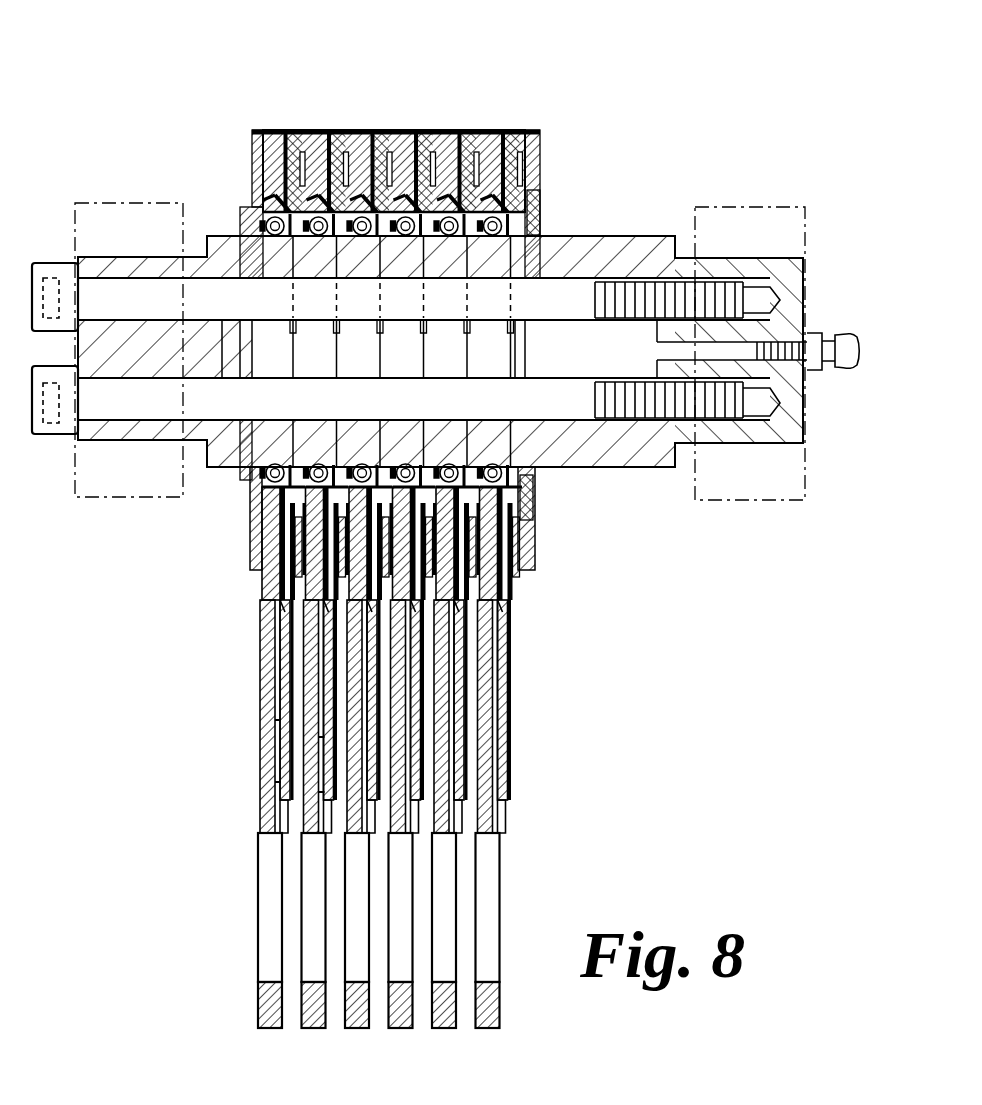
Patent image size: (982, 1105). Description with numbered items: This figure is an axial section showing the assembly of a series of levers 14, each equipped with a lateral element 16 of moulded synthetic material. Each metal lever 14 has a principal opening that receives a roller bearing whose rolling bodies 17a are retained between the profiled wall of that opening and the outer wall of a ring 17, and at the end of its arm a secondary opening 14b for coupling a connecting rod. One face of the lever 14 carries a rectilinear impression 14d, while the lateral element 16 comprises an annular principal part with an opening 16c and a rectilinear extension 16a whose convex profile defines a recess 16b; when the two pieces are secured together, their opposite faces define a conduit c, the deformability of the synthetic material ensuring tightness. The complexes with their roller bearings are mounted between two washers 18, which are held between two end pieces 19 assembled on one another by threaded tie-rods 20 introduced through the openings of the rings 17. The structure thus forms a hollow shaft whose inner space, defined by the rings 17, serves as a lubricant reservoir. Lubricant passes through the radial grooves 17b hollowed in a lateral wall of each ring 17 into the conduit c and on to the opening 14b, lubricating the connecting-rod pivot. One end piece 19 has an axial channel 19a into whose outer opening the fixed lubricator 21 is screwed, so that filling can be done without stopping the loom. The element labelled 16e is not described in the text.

The metal lever 14 is at (357, 130).
The lateral element 16 is at (468, 130).
The end piece 19 is at (657, 236).
The washer 18 is at (540, 163).
The rolling bodies 17a is at (270, 212).
The opening of the annular principal part 16c is at (540, 222).
The axial channel 19a is at (735, 347).
The threaded tie-rod 20 is at (168, 298).
The ring 17 is at (227, 403).
The radial grooves 17b is at (518, 435).
The lower housing wall 16e is at (533, 497).
The lubricator 21 is at (815, 368).
The conduit c is at (507, 658).
The recess 16b is at (507, 710).
The rectilinear extension 16a is at (507, 783).
The impression 14d is at (320, 737).
The secondary opening 14b is at (307, 977).